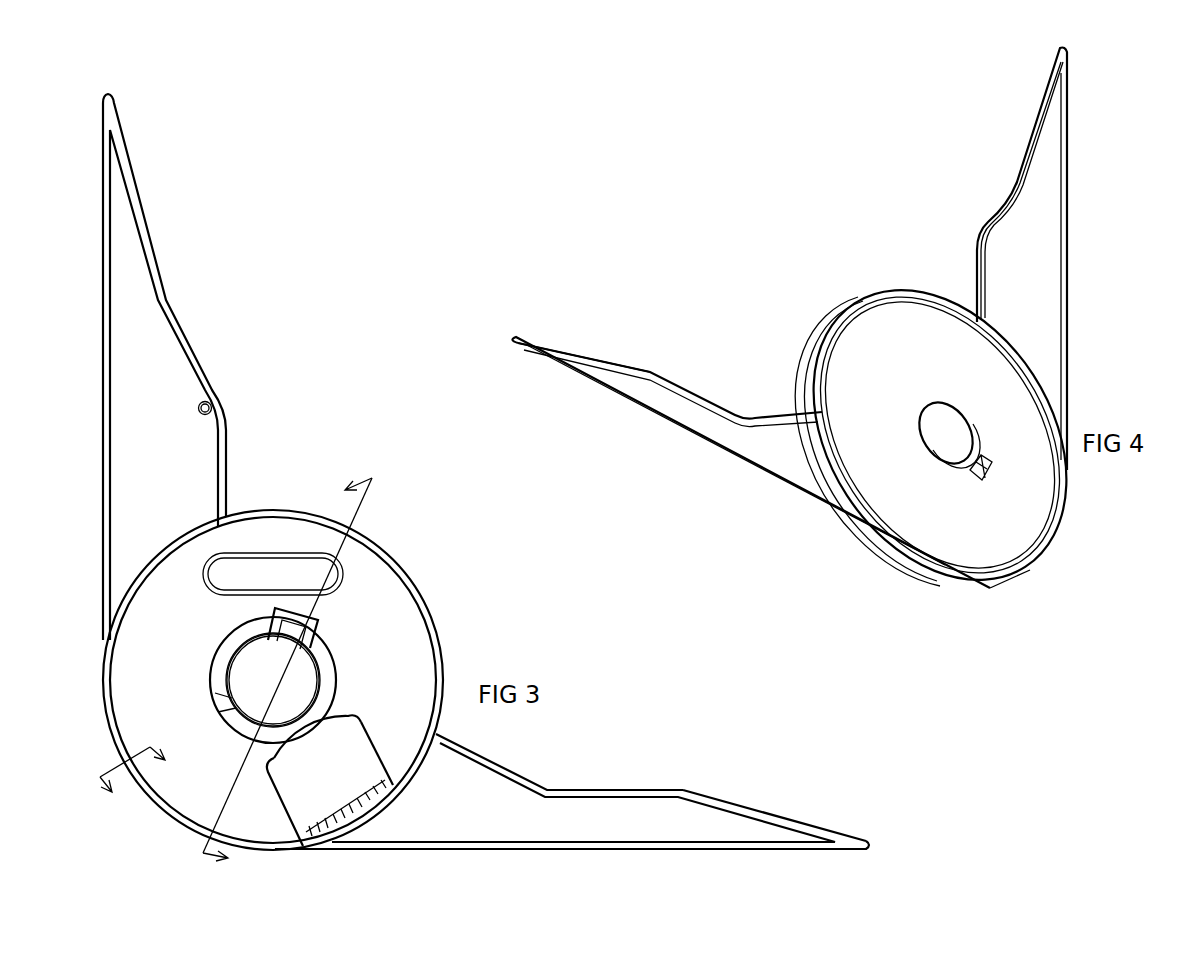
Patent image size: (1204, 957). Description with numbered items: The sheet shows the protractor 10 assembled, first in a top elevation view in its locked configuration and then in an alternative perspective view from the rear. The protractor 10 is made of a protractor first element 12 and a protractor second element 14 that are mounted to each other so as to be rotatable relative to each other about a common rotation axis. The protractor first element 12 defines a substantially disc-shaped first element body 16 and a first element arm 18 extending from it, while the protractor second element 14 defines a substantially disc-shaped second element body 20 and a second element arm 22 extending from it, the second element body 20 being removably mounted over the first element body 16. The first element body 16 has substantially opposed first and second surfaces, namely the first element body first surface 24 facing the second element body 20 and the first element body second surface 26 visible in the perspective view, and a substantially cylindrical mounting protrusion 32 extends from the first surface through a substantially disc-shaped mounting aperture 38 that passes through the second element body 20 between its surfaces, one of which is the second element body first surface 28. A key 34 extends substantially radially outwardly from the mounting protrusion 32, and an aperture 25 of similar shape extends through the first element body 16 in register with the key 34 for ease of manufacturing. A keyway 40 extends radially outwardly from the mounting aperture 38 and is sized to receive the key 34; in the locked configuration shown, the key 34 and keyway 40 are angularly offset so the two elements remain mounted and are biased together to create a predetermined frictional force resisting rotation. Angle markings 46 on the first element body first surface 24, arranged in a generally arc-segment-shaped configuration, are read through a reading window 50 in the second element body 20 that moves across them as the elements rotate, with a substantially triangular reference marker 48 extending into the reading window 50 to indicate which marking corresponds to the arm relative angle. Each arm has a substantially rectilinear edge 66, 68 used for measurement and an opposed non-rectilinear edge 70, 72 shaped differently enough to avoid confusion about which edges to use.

In FIG. 3, the protractor 10 is at (245, 159).
In FIG. 4, the protractor 10 is at (928, 128).
In FIG. 3, the protractor first element 12 is at (282, 432).
In FIG. 4, the protractor first element 12 is at (1109, 290).
In FIG. 3, the protractor second element 14 is at (524, 762).
In FIG. 4, the protractor second element 14 is at (721, 496).
In FIG. 3, the first element body 16 is at (395, 786).
In FIG. 4, the first element body 16 is at (1079, 525).
In FIG. 3, the first element arm 18 is at (192, 312).
In FIG. 4, the first element arm 18 is at (1075, 223).
In FIG. 3, the second element body 20 is at (421, 617).
In FIG. 4, the second element body 20 is at (846, 288).
In FIG. 3, the second element arm 22 is at (729, 790).
In FIG. 4, the second element arm 22 is at (675, 363).
In FIG. 3, the first element body first surface 24 is at (303, 780).
In FIG. 4, the aperture 25 is at (985, 478).
In FIG. 4, the first element body second surface 26 is at (927, 353).
In FIG. 3, the second element body first surface 28 is at (385, 640).
In FIG. 3, the mounting protrusion 32 is at (290, 690).
In FIG. 4, the mounting protrusion 32 is at (945, 447).
In FIG. 3, the key 34 is at (216, 700).
In FIG. 3, the mounting aperture 38 is at (323, 676).
In FIG. 3, the keyway 40 is at (283, 622).
In FIG. 3, the angle markings 46 is at (287, 804).
In FIG. 3, the reference marker 48 is at (356, 818).
In FIG. 3, the reading window 50 is at (340, 733).
In FIG. 3, the substantially rectilinear edge 66 is at (102, 382).
In FIG. 4, the substantially rectilinear edge 66 is at (1068, 338).
In FIG. 3, the substantially rectilinear edge 68 is at (685, 846).
In FIG. 4, the substantially rectilinear edge 68 is at (593, 385).
In FIG. 3, the non-rectilinear edge 70 is at (232, 382).
In FIG. 4, the non-rectilinear edge 70 is at (985, 225).
In FIG. 3, the non-rectilinear edge 72 is at (620, 778).
In FIG. 4, the non-rectilinear edge 72 is at (582, 355).